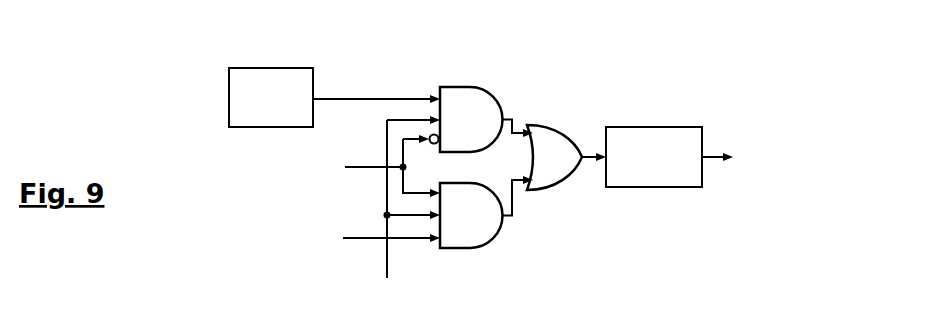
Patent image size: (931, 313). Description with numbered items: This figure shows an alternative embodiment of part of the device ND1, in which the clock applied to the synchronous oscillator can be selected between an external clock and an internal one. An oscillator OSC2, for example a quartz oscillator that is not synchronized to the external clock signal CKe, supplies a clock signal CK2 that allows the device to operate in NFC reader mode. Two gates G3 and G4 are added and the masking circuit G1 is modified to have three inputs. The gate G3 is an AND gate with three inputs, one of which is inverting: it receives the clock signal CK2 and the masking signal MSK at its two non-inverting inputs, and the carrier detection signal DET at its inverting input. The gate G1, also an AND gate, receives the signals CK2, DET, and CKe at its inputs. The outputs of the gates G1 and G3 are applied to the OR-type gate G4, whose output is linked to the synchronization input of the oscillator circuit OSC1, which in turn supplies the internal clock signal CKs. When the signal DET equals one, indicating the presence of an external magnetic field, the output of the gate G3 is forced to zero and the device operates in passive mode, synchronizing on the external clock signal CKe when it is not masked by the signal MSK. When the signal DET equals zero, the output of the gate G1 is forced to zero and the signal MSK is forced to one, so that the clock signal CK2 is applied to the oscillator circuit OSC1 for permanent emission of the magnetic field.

The device ND1 is at (170, 122).
The oscillator OSC2 is at (271, 97).
The clock signal CK2 is at (376, 92).
The AND gate G3 is at (460, 119).
The carrier detection signal DET is at (374, 168).
The masking signal MSK is at (405, 209).
The external clock signal CKe is at (373, 238).
The masking circuit G1 is at (486, 212).
The OR-type gate G4 is at (566, 157).
The oscillator circuit OSC1 is at (654, 157).
The internal clock signal CKs is at (734, 157).